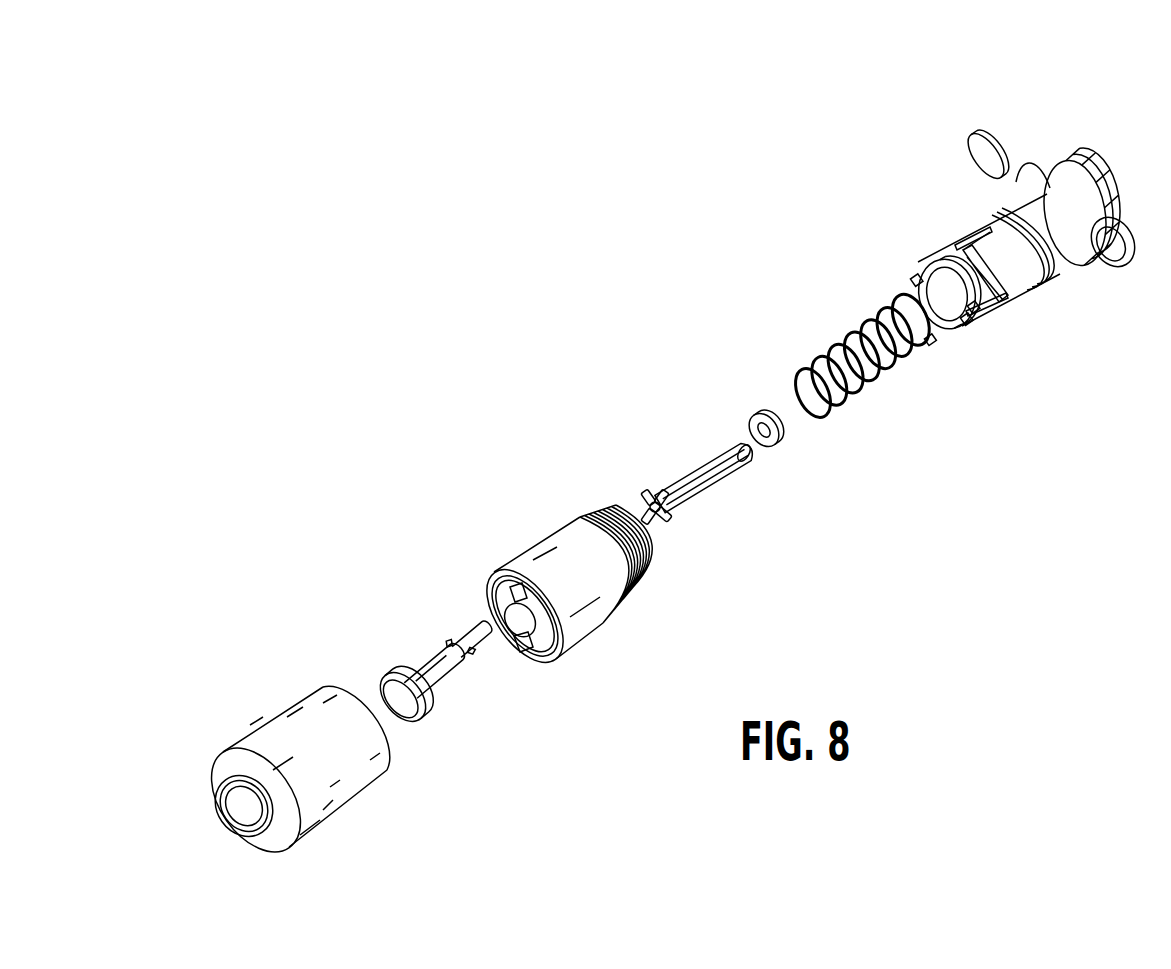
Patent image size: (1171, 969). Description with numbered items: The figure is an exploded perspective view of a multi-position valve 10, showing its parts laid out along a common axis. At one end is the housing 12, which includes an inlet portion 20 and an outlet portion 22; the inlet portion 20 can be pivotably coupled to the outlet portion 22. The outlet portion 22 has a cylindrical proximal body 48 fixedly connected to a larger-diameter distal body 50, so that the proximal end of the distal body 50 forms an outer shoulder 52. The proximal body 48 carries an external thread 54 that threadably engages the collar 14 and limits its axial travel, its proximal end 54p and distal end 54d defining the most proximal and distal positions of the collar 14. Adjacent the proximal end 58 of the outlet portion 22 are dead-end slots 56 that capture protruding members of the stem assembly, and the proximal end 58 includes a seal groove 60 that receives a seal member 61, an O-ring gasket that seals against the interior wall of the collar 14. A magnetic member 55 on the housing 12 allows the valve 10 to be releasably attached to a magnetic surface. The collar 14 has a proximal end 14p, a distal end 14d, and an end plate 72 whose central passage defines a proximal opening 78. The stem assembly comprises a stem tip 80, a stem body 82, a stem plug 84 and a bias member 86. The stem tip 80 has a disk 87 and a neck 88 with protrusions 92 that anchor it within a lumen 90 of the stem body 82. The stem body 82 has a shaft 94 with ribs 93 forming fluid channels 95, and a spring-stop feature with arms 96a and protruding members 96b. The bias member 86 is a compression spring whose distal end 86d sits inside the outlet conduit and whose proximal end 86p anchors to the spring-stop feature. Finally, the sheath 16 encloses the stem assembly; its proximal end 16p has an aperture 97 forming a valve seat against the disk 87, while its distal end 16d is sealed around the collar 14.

The multi-position valve 10 is at (243, 600).
The housing 12 is at (1067, 116).
The collar 14 is at (547, 530).
The distal end of the collar 14d is at (590, 510).
The proximal end of the collar 14p is at (490, 633).
The sheath 16 is at (262, 708).
The distal end of the sheath 16d is at (327, 688).
The proximal end of the sheath 16p is at (217, 763).
The inlet portion 20 is at (1130, 226).
The outlet portion 22 is at (937, 244).
The proximal body 48 is at (1013, 280).
The distal body 50 is at (1073, 167).
The outer shoulder 52 is at (1003, 205).
The external thread 54 is at (977, 330).
The distal end of the external thread 54d is at (1030, 275).
The proximal end of the external thread 54p is at (967, 235).
The magnetic member 55 is at (983, 130).
The dead-end slots 56 is at (918, 282).
The proximal end of the outlet portion 58 is at (923, 270).
The seal groove 60 is at (967, 320).
The seal member 61 is at (930, 347).
The end plate 72 is at (543, 657).
The proximal opening 78 is at (517, 622).
The stem tip 80 is at (410, 652).
The stem body 82 is at (697, 442).
The stem plug 84 is at (757, 412).
The bias member 86 is at (867, 402).
The distal end of the bias member 86d is at (887, 317).
The proximal end of the bias member 86p is at (797, 377).
The disk 87 is at (410, 728).
The neck 88 is at (443, 682).
The lumen 90 is at (663, 523).
The protrusions 92 is at (462, 647).
The ribs 93 is at (707, 497).
The shaft 94 is at (680, 477).
The fluid channels 95 is at (713, 472).
The arms 96a is at (677, 530).
The protruding members 96b is at (657, 487).
The aperture 97 is at (247, 808).